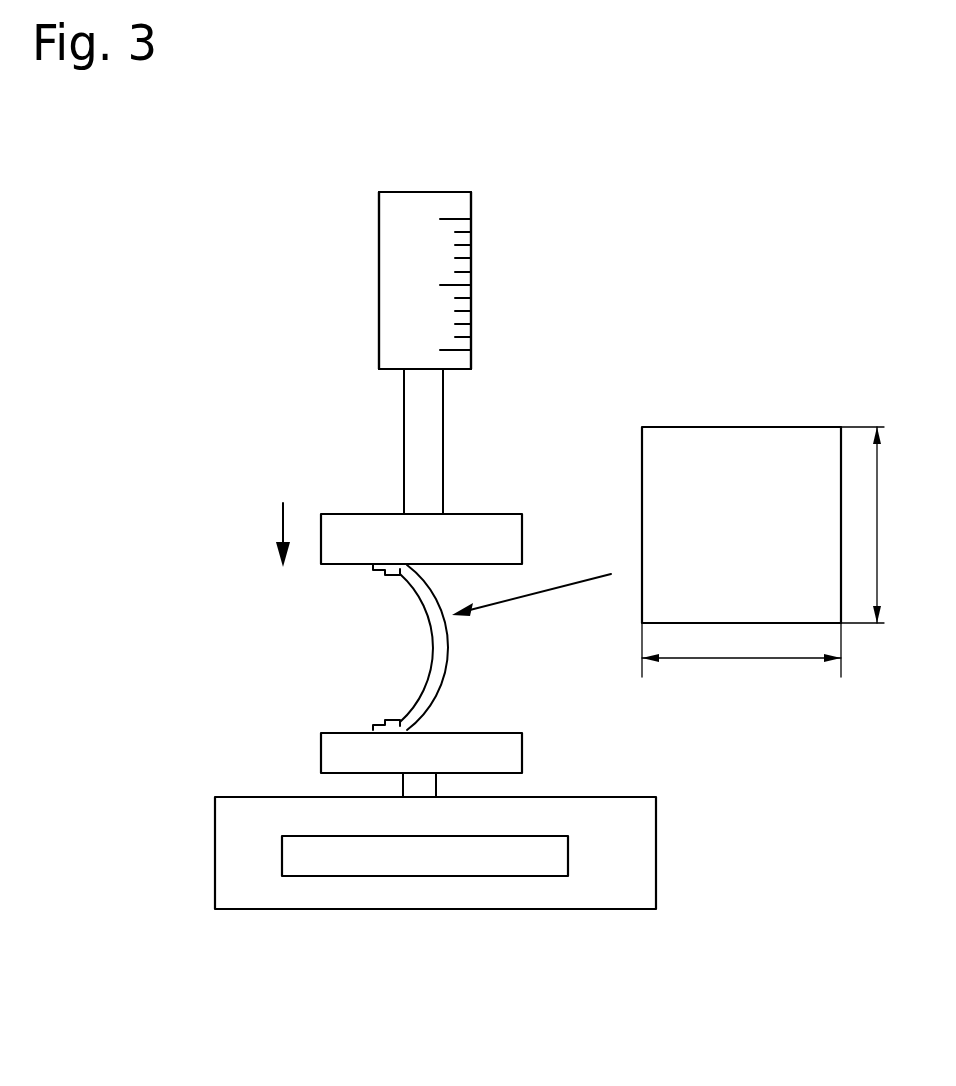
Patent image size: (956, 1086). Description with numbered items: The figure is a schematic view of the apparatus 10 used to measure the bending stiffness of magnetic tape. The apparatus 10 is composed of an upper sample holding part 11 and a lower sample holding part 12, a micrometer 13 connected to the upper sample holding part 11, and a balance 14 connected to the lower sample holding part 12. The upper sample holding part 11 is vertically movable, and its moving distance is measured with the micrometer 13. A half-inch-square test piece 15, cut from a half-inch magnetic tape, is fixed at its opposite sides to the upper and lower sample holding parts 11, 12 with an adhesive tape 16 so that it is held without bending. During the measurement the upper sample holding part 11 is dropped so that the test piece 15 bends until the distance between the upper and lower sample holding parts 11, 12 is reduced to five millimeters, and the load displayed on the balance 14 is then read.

The apparatus 10 is at (514, 246).
The upper sample holding part 11 is at (522, 540).
The lower sample holding part 12 is at (522, 752).
The micrometer 13 is at (472, 360).
The balance 14 is at (656, 823).
The test piece 15 is at (448, 650).
The adhesive tape 16 is at (378, 576).